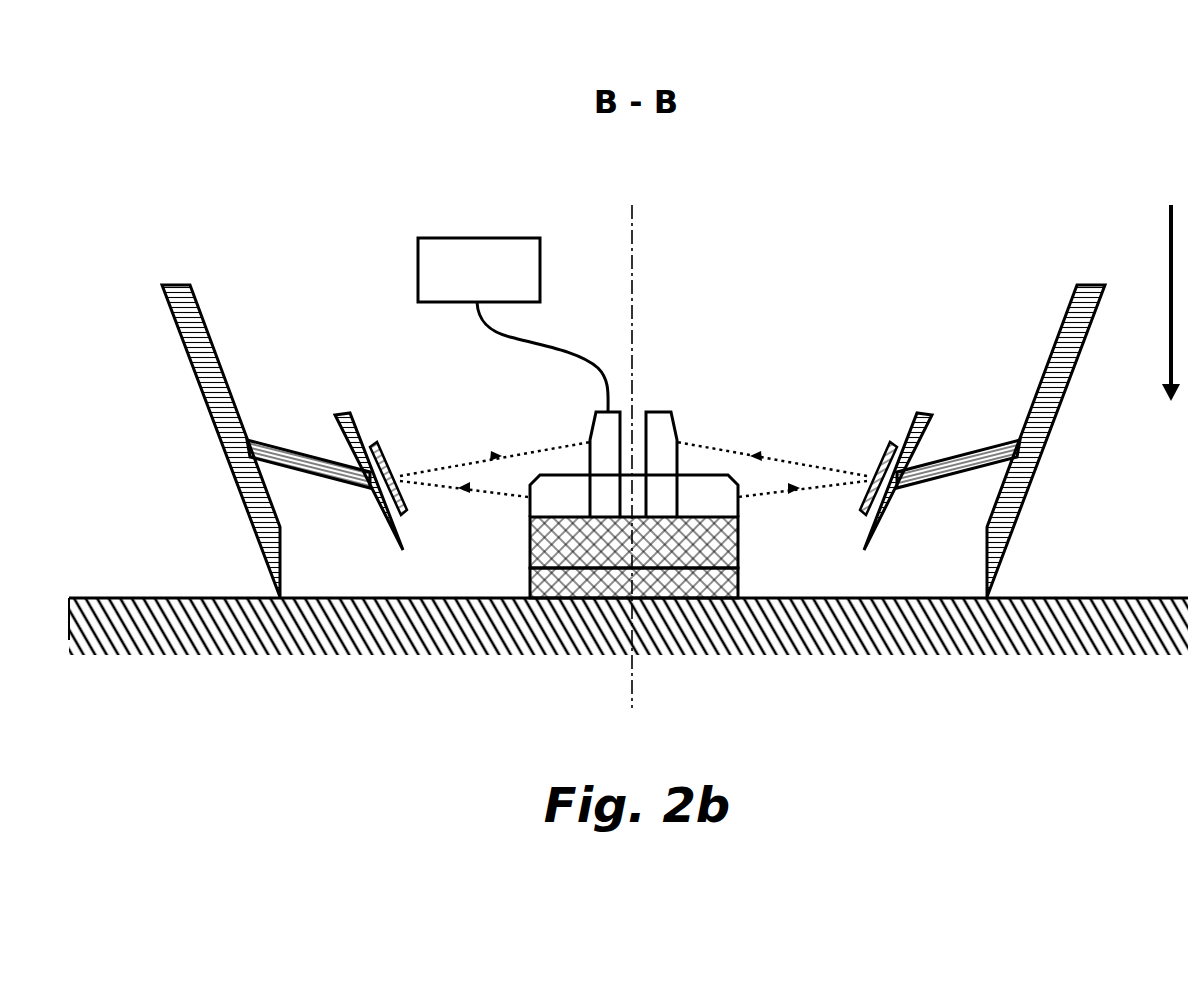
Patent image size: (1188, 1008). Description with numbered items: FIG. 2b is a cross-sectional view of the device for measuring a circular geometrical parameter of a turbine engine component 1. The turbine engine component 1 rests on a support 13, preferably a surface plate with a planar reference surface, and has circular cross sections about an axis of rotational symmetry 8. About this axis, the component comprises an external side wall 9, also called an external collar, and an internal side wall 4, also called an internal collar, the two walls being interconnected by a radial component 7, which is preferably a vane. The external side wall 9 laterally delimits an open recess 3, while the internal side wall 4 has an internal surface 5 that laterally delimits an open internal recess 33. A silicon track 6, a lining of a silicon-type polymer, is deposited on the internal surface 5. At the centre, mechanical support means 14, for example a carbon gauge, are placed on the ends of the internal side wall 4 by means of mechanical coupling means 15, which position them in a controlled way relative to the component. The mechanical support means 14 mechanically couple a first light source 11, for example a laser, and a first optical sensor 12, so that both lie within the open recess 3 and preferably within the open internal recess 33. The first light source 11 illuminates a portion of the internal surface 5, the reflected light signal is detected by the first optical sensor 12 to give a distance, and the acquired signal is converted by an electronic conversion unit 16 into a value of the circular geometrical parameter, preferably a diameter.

The turbine engine component 1 is at (631, 433).
The open recess 3 is at (978, 339).
The internal side wall 4 is at (631, 464).
The internal surface 5 is at (405, 513).
The silicon track 6 is at (387, 463).
The radial component 7 is at (265, 450).
The axis of rotational symmetry 8 is at (633, 325).
The external side wall 9 is at (200, 340).
The first light source 11 is at (634, 497).
The first optical sensor 12 is at (605, 443).
The support 13 is at (112, 598).
The mechanical support means 14 is at (540, 535).
The mechanical coupling means 15 is at (737, 575).
The electronic conversion unit 16 is at (418, 278).
The open internal recess 33 is at (633, 458).